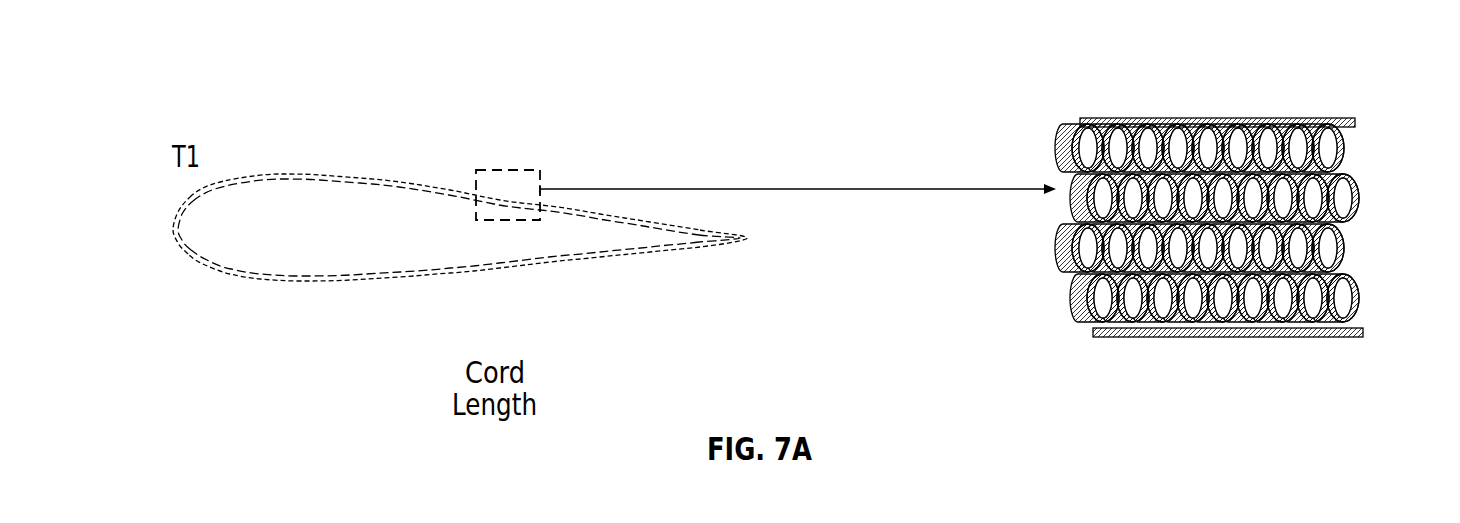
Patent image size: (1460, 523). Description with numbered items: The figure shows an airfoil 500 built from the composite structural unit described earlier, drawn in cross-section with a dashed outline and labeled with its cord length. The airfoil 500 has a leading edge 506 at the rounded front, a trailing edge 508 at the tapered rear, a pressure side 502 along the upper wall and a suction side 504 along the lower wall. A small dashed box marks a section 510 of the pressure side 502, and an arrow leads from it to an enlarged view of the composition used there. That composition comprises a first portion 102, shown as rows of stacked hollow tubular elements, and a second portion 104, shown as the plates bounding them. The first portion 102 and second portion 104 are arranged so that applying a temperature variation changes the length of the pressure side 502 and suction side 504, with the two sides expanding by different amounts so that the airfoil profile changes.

The airfoil 500 is at (628, 133).
The pressure side 502 is at (352, 176).
The suction side 504 is at (320, 282).
The leading edge 506 is at (177, 240).
The trailing edge 508 is at (749, 239).
The section 510 is at (508, 170).
The first portion 102 is at (1350, 152).
The second portion 104 is at (1340, 117).